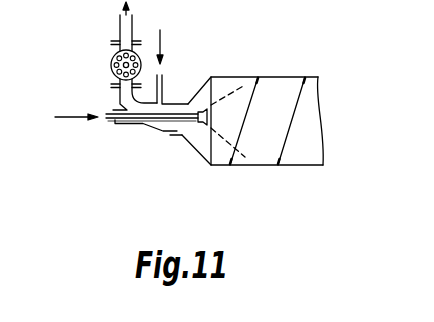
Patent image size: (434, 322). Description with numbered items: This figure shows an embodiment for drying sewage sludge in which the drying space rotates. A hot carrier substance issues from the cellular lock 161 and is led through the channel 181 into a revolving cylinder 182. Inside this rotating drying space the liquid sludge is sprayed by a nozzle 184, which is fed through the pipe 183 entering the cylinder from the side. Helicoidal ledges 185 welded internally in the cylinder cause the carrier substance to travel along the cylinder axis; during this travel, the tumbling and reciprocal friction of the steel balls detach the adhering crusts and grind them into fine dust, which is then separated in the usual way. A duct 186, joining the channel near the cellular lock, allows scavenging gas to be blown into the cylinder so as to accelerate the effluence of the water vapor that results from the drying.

The cellular lock 161 is at (113, 53).
The channel 181 is at (122, 97).
The revolving cylinder 182 is at (246, 77).
The pipe 183 is at (108, 122).
The nozzle 184 is at (199, 128).
The helicoidal ledges 185 is at (228, 163).
The duct 186 is at (160, 75).